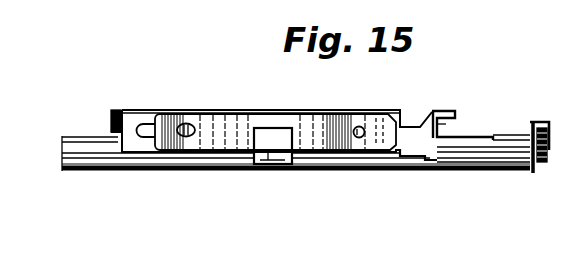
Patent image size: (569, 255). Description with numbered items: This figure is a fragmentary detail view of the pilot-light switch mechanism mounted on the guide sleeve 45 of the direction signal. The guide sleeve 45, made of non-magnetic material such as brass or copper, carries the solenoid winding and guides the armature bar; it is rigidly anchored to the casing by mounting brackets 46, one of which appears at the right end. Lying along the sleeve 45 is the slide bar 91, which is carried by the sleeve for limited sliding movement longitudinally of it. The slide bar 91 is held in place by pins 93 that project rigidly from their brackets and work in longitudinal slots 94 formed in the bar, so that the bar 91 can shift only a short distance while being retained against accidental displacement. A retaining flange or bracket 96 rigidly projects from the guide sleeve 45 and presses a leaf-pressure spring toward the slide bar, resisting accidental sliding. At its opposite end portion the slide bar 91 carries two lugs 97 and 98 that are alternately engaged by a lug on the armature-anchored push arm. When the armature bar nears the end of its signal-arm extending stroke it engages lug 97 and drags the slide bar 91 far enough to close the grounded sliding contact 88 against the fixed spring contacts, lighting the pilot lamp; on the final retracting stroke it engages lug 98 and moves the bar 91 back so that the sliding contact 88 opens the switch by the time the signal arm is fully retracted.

The guide sleeve 45 is at (110, 163).
The mounting brackets 46 is at (541, 121).
The grounded sliding contact 88 is at (450, 110).
The slide bar 91 is at (398, 109).
The pins 93 is at (189, 124).
The longitudinal slots 94 is at (150, 122).
The retaining flange or bracket 96 is at (262, 166).
The slide bar lug 97 is at (108, 110).
The slide bar lug 98 is at (452, 127).